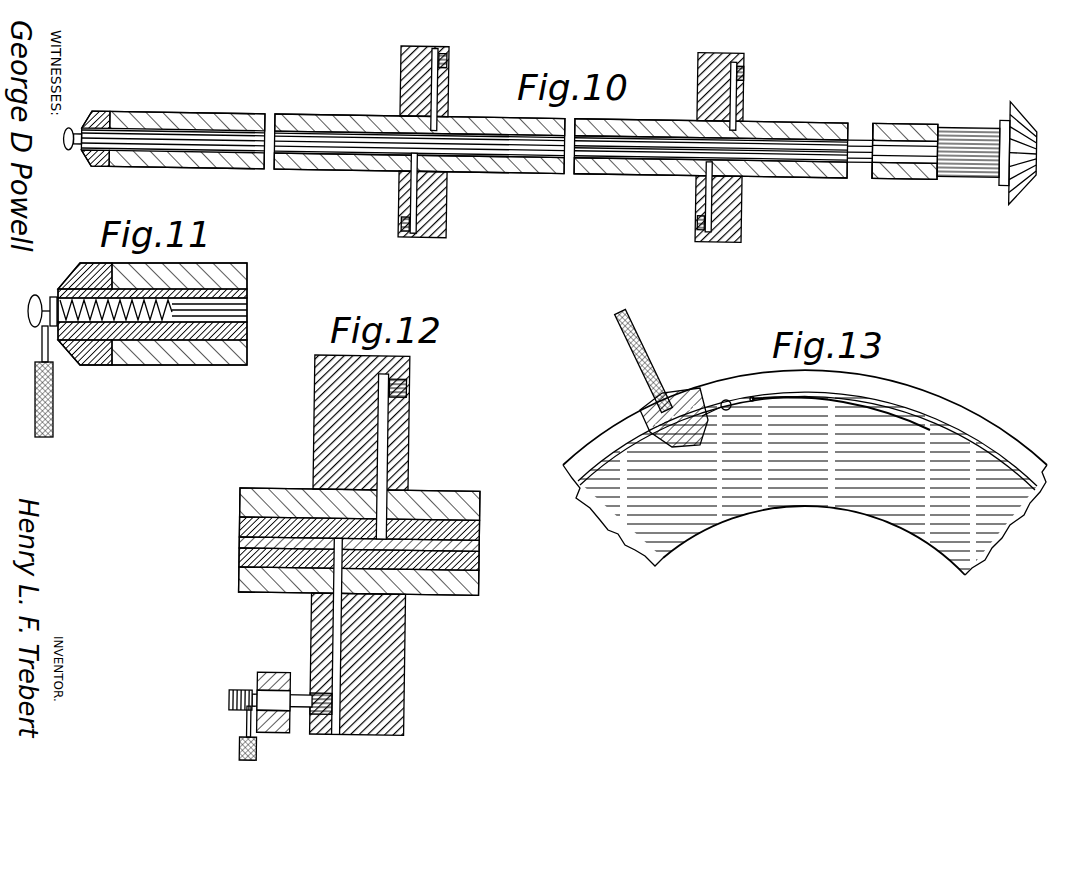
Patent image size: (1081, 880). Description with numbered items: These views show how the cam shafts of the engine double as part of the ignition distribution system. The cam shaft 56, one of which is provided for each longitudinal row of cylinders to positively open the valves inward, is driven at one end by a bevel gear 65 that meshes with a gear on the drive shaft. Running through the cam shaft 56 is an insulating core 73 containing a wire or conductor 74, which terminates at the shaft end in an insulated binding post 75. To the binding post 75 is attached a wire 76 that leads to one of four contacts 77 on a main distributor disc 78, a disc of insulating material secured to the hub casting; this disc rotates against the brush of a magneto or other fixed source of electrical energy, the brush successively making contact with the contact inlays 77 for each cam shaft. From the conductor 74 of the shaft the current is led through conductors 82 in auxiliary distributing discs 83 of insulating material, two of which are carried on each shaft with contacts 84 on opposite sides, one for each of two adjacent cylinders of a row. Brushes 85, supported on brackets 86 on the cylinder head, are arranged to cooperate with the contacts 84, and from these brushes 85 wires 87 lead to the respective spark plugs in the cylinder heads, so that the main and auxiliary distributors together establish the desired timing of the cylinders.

In FIG. 10, the cam shaft 56 is at (812, 130).
In FIG. 11, the cam shaft 56 is at (222, 274).
In FIG. 12, the cam shaft 56 is at (268, 490).
In FIG. 10, the bevel gear 65 is at (1013, 110).
In FIG. 10, the insulating core 73 is at (636, 152).
In FIG. 11, the insulating core 73 is at (247, 304).
In FIG. 12, the insulating core 73 is at (241, 562).
In FIG. 11, the wire or conductor 74 is at (247, 320).
In FIG. 12, the wire or conductor 74 is at (481, 546).
In FIG. 10, the insulated binding post 75 is at (70, 151).
In FIG. 11, the insulated binding post 75 is at (33, 326).
In FIG. 11, the wire 76 is at (35, 400).
In FIG. 13, the wire 76 is at (652, 370).
In FIG. 13, the contact 77 is at (636, 440).
In FIG. 13, the main distributor disc 78 is at (809, 498).
In FIG. 10, the conductor 82 is at (446, 100).
In FIG. 12, the conductor 82 is at (389, 502).
In FIG. 10, the auxiliary distributing disc 83 is at (400, 78).
In FIG. 12, the auxiliary distributing disc 83 is at (409, 450).
In FIG. 10, the contact 84 is at (447, 62).
In FIG. 12, the contact 84 is at (407, 391).
In FIG. 12, the brush 85 is at (303, 691).
In FIG. 12, the bracket 86 is at (265, 672).
In FIG. 12, the wire 87 is at (248, 748).